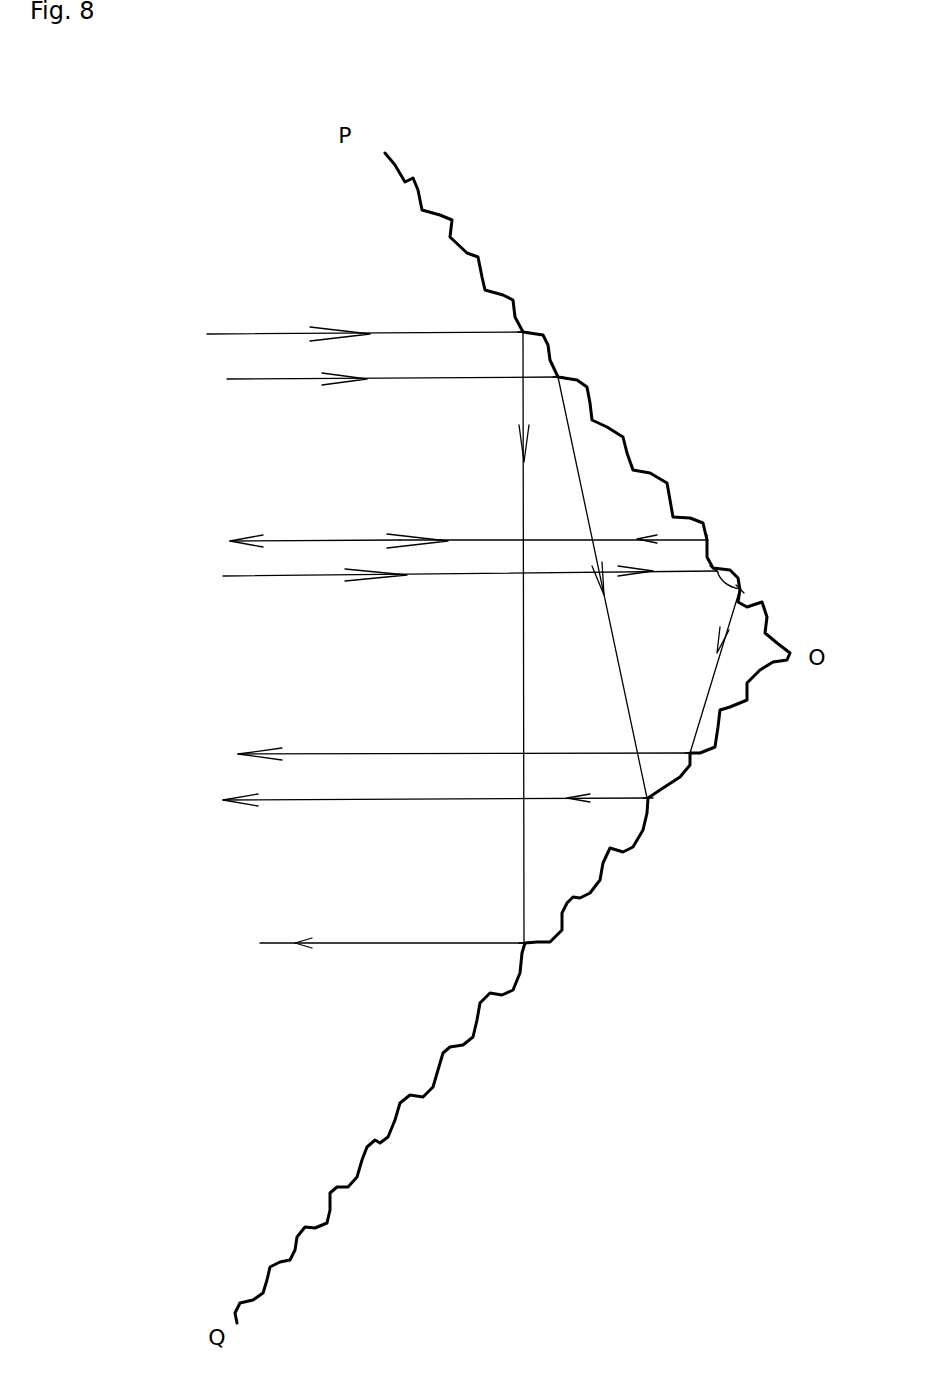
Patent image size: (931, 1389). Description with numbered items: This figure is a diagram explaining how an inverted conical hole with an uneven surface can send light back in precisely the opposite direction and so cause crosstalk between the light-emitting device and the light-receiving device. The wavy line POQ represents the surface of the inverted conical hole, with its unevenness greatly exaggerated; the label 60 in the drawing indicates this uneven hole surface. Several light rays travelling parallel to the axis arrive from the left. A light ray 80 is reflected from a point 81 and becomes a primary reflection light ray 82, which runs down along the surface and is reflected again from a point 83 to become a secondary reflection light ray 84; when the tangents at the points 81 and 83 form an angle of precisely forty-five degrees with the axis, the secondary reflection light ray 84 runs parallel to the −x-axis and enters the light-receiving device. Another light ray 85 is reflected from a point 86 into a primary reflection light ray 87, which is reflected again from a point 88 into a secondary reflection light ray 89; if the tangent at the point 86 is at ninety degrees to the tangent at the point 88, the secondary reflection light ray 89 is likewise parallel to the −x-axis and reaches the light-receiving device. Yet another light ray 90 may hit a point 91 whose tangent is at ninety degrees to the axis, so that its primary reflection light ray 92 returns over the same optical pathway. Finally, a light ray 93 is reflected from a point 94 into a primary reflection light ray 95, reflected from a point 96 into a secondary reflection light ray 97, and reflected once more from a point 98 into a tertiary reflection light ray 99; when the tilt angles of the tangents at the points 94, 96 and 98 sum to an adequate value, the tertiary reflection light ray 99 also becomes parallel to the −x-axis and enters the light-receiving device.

The optical element 60 is at (616, 325).
The light ray 80 is at (365, 328).
The point 81 is at (524, 331).
The primary reflection light ray 82 is at (522, 637).
The point 83 is at (525, 944).
The secondary reflection light ray 84 is at (392, 943).
The light ray 85 is at (392, 378).
The point 86 is at (559, 377).
The primary reflection light ray 87 is at (601, 587).
The point 88 is at (649, 799).
The secondary reflection light ray 89 is at (435, 799).
The light ray 90 is at (547, 537).
The point 91 is at (709, 540).
The primary reflection light ray 92 is at (315, 538).
The light ray 93 is at (470, 577).
The point 94 is at (713, 570).
The primary reflection light ray 95 is at (724, 584).
The point 96 is at (741, 589).
The secondary reflection light ray 97 is at (713, 671).
The point 98 is at (689, 752).
The tertiary reflection light ray 99 is at (464, 752).